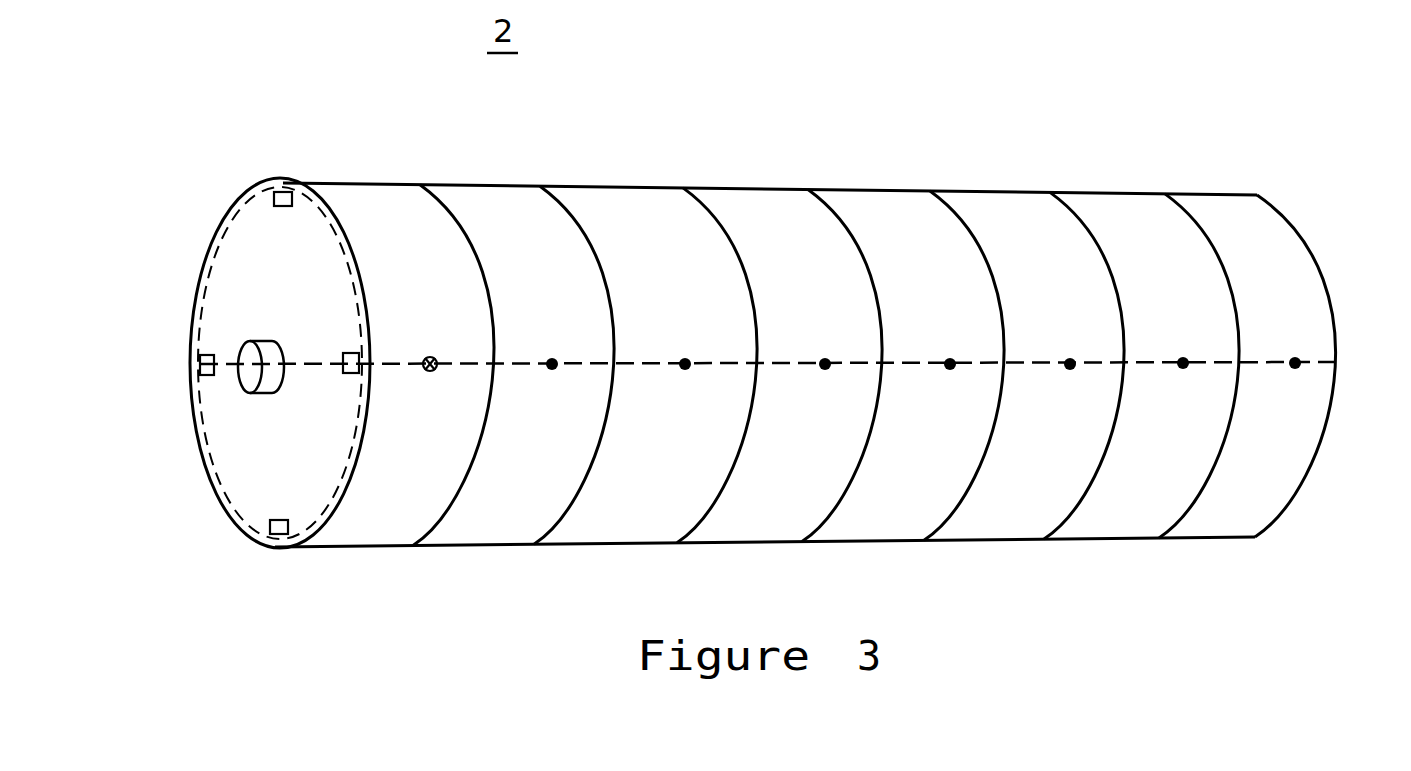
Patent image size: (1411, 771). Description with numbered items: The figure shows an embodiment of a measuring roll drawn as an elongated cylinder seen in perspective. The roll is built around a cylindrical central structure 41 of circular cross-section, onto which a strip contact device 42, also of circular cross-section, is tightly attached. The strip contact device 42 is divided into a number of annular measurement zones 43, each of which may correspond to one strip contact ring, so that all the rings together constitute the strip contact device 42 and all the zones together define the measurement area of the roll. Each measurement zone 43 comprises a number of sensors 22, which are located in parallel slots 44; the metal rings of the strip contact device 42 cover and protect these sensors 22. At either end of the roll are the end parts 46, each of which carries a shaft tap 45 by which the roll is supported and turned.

The sensors 22 is at (480, 160).
The cylindrical central structure 41 is at (238, 468).
The strip contact device 42 is at (245, 200).
The measurement zone 43 is at (467, 530).
The parallel slots 44 is at (290, 185).
The shaft tap 45 is at (250, 345).
The end parts 46 is at (255, 520).